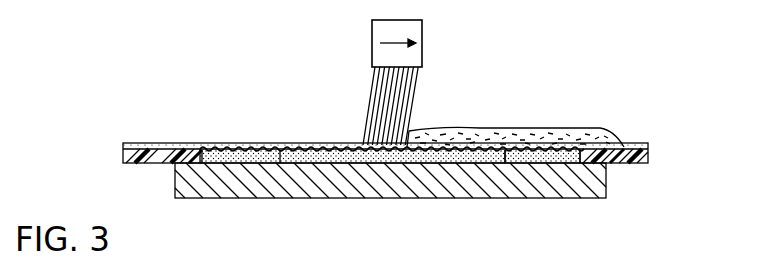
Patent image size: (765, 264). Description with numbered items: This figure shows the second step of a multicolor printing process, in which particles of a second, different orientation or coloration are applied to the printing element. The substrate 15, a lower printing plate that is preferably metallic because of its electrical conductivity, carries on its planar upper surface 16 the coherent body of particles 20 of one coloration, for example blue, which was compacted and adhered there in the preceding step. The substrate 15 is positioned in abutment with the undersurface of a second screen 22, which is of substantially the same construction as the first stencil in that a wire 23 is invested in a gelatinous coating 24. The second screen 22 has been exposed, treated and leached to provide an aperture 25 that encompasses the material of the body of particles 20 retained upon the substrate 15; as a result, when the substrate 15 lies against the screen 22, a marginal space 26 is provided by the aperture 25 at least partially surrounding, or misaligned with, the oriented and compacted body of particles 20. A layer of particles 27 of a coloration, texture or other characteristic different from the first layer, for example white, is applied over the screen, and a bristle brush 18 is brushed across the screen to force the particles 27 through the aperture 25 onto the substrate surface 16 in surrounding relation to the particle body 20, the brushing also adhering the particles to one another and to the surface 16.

The substrate 15 is at (343, 201).
The upper surface 16 is at (437, 153).
The bristle brush 18 is at (428, 42).
The coherent body of particles 20 is at (321, 150).
The second screen 22 is at (148, 139).
The wire 23 is at (208, 147).
The gelatinous coating 24 is at (137, 150).
The aperture 25 is at (207, 153).
The marginal space 26 is at (523, 160).
The particles of different coloration 27 is at (486, 140).